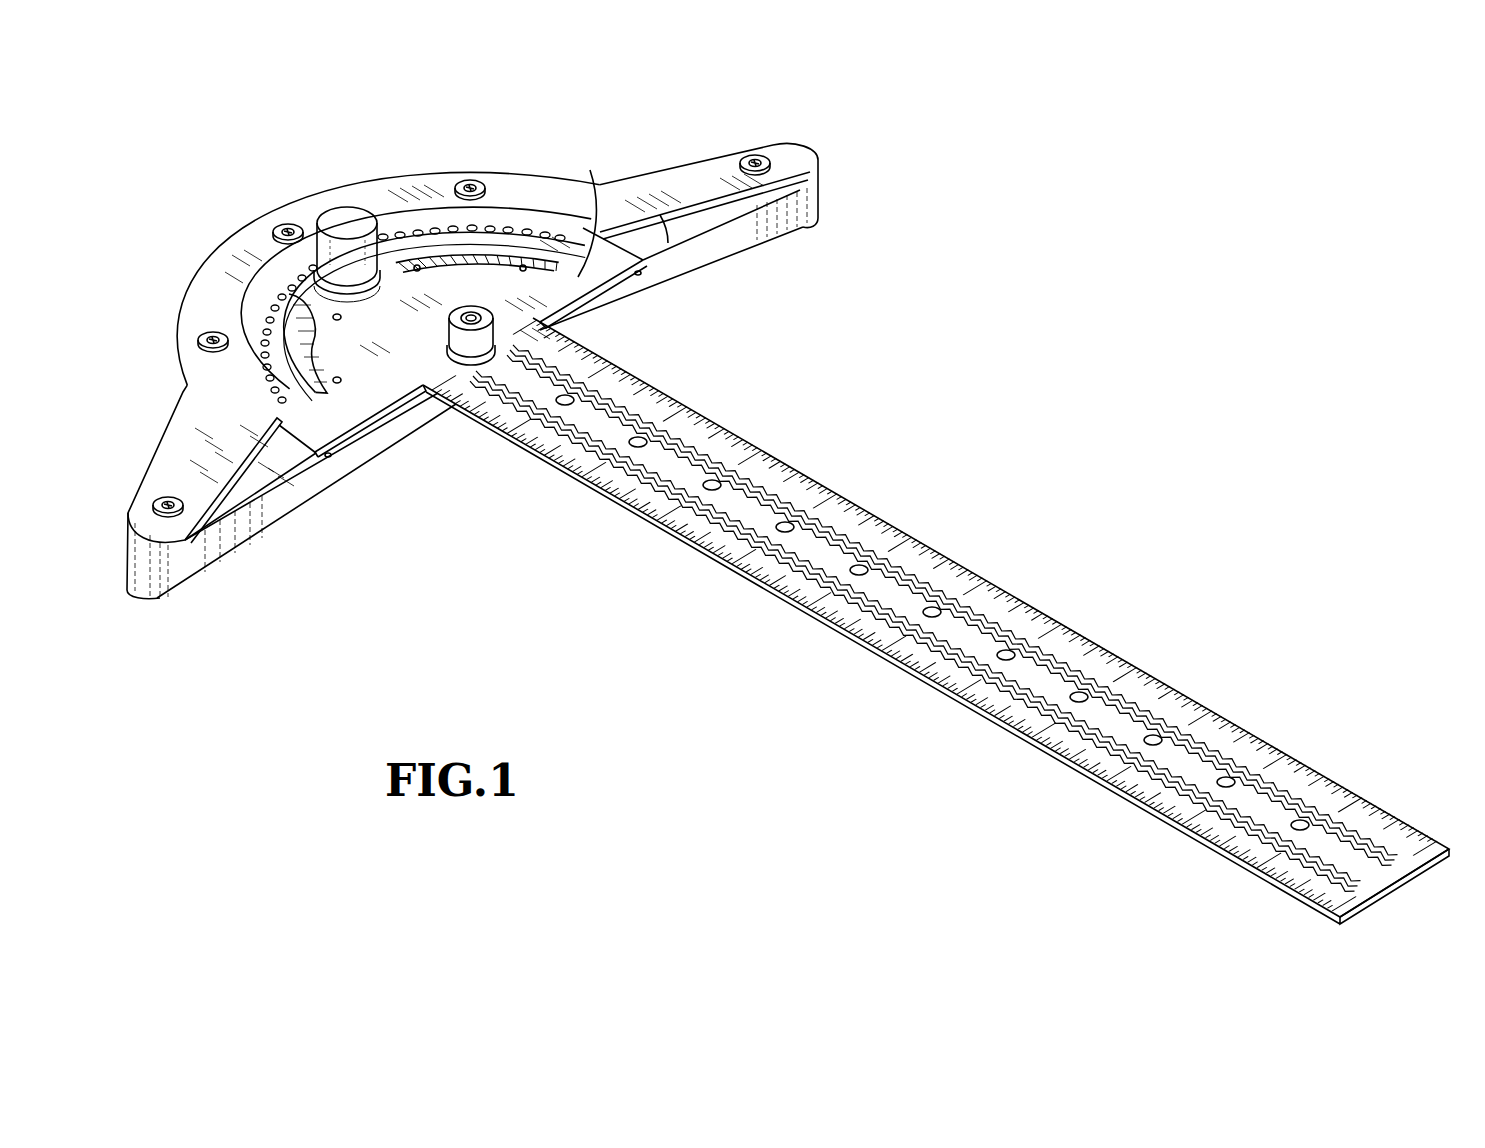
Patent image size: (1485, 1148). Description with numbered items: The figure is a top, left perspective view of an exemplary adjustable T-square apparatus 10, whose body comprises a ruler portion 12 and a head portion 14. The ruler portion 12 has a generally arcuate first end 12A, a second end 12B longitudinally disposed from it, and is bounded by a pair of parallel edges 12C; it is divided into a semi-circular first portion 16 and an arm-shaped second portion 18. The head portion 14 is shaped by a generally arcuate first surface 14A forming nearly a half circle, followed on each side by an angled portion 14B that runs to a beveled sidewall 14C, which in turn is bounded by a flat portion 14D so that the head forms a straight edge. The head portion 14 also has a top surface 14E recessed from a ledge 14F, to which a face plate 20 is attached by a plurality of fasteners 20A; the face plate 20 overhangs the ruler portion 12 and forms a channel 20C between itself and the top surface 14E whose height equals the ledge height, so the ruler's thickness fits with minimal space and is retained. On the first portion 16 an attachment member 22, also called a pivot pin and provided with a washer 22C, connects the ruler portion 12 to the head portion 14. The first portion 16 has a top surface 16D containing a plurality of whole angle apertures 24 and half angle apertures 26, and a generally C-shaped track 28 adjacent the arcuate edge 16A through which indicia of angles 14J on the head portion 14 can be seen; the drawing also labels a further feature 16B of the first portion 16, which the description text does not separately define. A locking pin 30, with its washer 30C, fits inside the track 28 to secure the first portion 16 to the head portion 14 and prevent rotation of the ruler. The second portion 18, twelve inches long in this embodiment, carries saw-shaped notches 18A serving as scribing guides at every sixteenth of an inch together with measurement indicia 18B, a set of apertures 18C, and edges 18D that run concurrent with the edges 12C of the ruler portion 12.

The adjustable T-square apparatus 10 is at (1048, 262).
The ruler portion 12 is at (965, 560).
The first end 12A is at (289, 269).
The second end 12B is at (1382, 910).
The edges 12C is at (762, 430).
The head portion 14 is at (707, 273).
The first surface 14A is at (180, 387).
The angled portion 14B is at (177, 478).
The beveled sidewall 14C is at (142, 567).
The flat portion 14D is at (779, 301).
The top surface 14E is at (660, 215).
The ledge 14F is at (243, 477).
The indicia of angles 14J is at (305, 338).
The first portion 16 is at (585, 300).
The arcuate edge 16A is at (292, 445).
The rail of fence plate 16B is at (387, 413).
The top surface 16D is at (590, 170).
The second portion 18 is at (928, 680).
The notches 18A is at (1018, 628).
The measurement indicia 18B is at (1204, 711).
The apertures 18C is at (1301, 828).
The edges 18D is at (793, 473).
The face plate 20 is at (373, 187).
The fasteners 20A is at (280, 228).
The channel 20C is at (297, 462).
The attachment member 22 is at (452, 320).
The washer 22C is at (450, 340).
The whole angle apertures 24 is at (545, 243).
The half angle apertures 26 is at (523, 268).
The track 28 is at (444, 212).
The locking pin 30 is at (330, 208).
The washer 30C is at (312, 297).